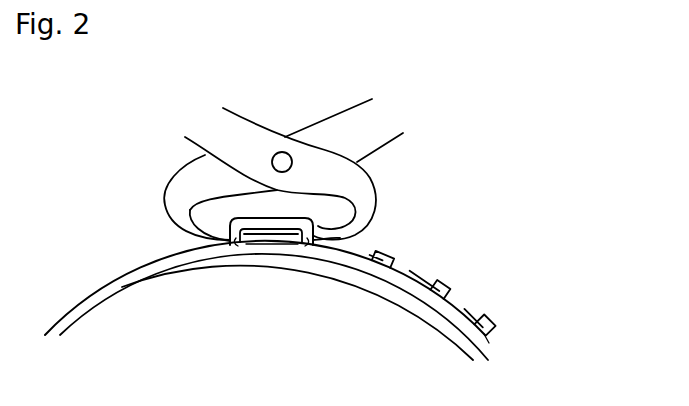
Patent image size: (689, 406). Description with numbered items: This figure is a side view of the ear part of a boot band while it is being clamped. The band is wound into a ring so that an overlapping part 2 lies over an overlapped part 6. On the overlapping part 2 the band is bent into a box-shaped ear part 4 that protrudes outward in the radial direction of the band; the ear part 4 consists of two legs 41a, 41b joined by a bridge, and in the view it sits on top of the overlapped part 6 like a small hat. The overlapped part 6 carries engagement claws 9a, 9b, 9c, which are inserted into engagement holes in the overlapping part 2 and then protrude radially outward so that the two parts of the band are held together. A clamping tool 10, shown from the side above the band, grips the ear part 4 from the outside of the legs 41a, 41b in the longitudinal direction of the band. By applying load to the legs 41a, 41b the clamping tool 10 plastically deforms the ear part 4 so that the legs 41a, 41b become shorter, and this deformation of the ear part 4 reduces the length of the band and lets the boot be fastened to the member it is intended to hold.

The overlapping part 2 is at (157, 263).
The ear part 4 is at (247, 218).
The overlapped part 6 is at (200, 262).
The clamping tool 10 is at (337, 133).
The leg 41a is at (298, 244).
The leg 41b is at (247, 244).
The engagement claw 9a is at (383, 251).
The engagement claw 9b is at (432, 284).
The engagement claw 9c is at (478, 316).